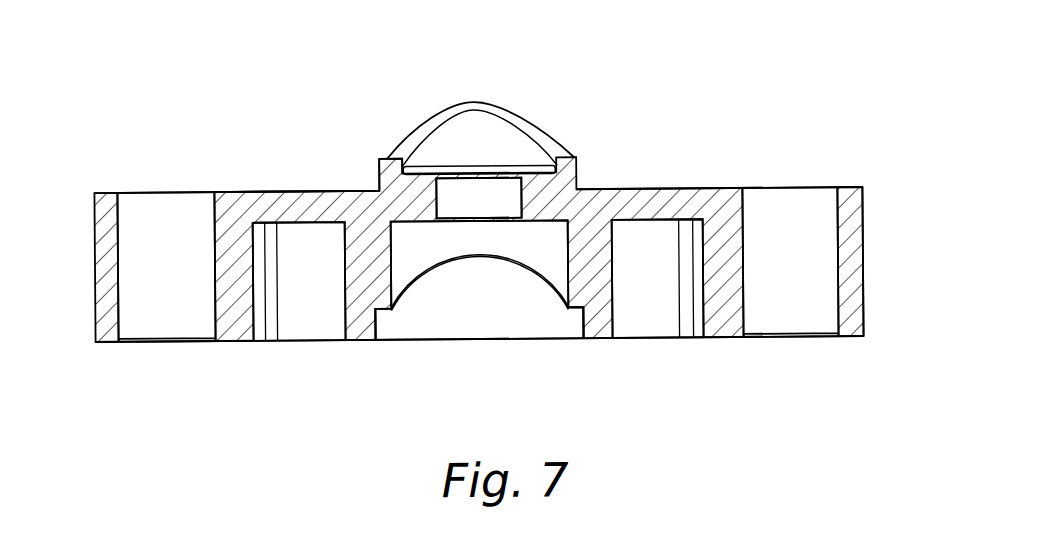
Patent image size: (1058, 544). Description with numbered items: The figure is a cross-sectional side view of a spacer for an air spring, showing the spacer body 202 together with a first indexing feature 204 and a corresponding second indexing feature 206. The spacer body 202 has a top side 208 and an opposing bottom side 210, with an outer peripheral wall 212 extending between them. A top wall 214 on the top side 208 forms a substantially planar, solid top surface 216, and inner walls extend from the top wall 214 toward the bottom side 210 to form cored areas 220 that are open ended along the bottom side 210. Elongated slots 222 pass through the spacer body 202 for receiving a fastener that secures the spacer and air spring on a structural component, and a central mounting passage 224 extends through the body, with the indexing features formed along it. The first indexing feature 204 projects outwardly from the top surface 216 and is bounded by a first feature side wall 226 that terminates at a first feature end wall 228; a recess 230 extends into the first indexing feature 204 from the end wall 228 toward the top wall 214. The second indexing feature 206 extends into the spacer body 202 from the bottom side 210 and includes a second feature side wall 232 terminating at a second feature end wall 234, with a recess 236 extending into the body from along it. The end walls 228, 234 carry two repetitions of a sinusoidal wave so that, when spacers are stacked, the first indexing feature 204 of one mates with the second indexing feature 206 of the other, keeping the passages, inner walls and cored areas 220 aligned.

The spacer body 202 is at (817, 123).
The first indexing feature 204 is at (564, 131).
The second indexing feature 206 is at (525, 348).
The top side 208 is at (100, 180).
The bottom side 210 is at (98, 345).
The outer peripheral wall 212 is at (863, 272).
The top wall 214 is at (657, 204).
The top surface 216 is at (236, 191).
The cored areas 220 is at (297, 310).
The slots 222 is at (166, 215).
The central mounting passage 224 is at (492, 183).
The first feature side wall 226 is at (380, 172).
The first feature end wall 228 is at (385, 158).
The recess 230 is at (458, 133).
The second feature side wall 232 is at (578, 326).
The second feature end wall 234 is at (388, 309).
The recess 236 is at (497, 237).